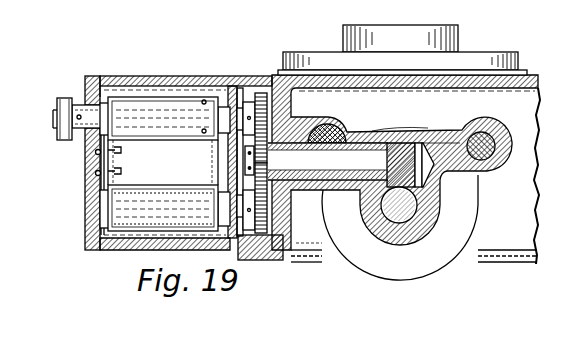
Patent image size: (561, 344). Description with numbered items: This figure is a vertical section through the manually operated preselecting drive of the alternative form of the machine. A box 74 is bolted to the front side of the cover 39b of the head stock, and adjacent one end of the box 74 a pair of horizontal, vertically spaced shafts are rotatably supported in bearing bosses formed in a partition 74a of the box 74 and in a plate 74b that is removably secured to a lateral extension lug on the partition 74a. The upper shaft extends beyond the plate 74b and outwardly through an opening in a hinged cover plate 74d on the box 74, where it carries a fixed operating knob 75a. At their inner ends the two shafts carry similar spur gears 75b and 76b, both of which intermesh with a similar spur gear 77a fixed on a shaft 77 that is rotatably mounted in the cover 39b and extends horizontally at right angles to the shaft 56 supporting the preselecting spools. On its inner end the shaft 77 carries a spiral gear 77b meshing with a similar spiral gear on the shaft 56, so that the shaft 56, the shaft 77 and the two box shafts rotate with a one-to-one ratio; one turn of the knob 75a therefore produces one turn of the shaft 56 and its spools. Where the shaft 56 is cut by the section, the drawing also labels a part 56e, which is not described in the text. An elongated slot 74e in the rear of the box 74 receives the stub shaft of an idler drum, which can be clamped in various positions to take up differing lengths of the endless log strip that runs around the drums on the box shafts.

The cover 39b is at (500, 72).
The shaft 56 is at (383, 222).
The wheel journal 56e is at (437, 207).
The box 74 is at (147, 80).
The partition 74a is at (231, 78).
The plate 74b is at (108, 194).
The hinged cover plate 74d is at (86, 168).
The elongated slot 74e is at (163, 162).
The operating knob 75a is at (60, 97).
The spur gear 75b is at (262, 93).
The spur gear 76b is at (268, 245).
The shaft 77 is at (351, 165).
The spur gear 77a is at (248, 153).
The spiral gear 77b is at (408, 131).